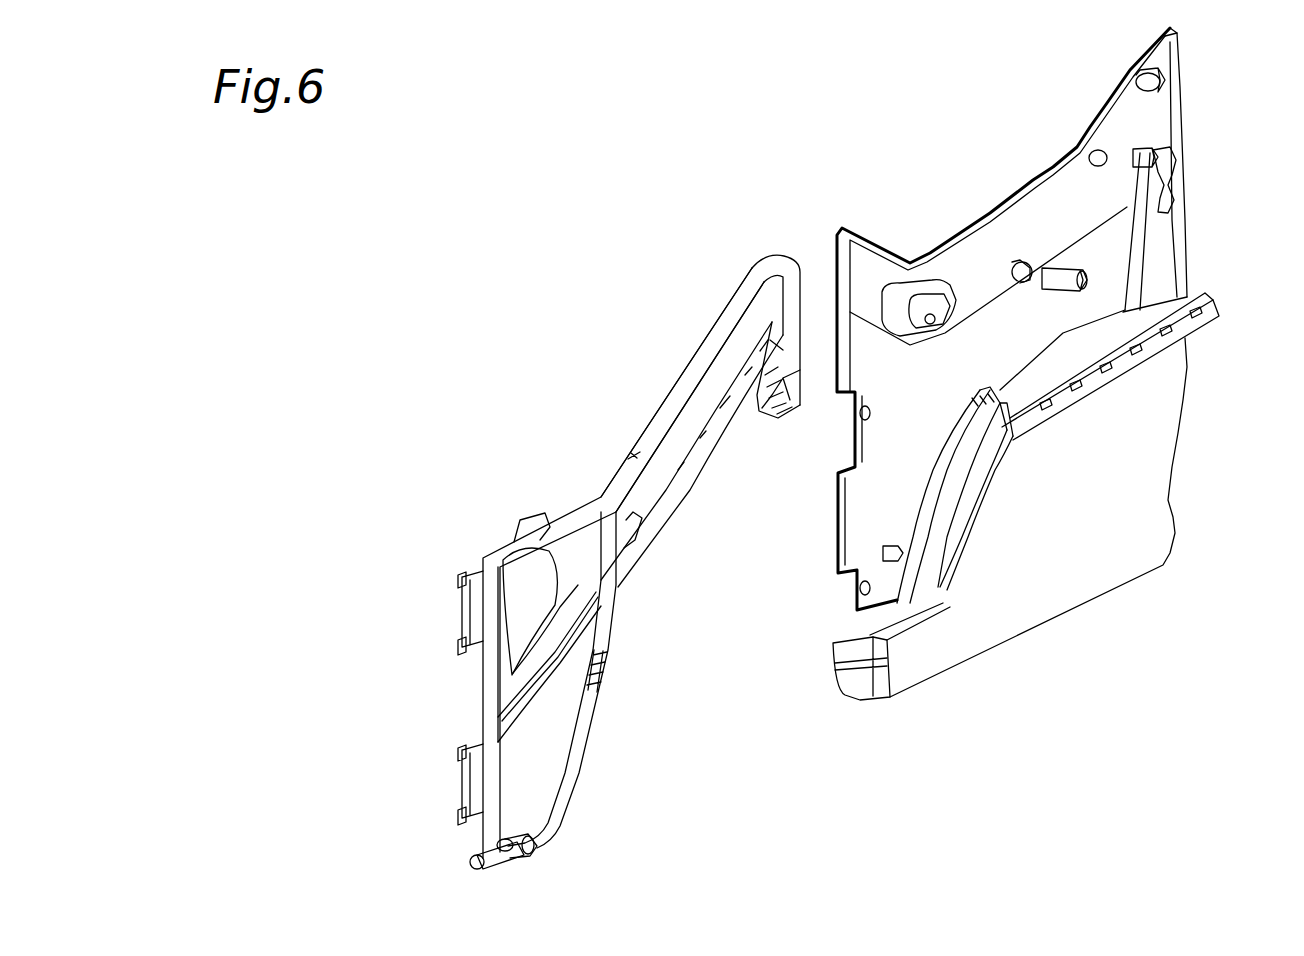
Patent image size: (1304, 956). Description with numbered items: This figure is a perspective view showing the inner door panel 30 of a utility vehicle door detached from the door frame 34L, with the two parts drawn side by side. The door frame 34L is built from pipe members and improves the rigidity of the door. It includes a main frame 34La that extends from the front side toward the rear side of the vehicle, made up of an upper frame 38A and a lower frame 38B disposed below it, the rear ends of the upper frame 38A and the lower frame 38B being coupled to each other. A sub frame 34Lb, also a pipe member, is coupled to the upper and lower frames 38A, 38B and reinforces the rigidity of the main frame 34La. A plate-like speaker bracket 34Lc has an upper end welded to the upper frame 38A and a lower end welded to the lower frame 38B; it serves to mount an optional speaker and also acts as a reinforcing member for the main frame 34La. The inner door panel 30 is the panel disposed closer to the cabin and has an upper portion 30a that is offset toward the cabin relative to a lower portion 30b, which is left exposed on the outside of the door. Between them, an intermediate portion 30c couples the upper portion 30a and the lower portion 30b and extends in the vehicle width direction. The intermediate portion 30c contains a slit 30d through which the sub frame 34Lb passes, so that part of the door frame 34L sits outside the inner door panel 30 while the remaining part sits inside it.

The inner door panel 30 is at (1098, 120).
The upper portion 30a is at (1163, 250).
The lower portion 30b is at (1157, 430).
The intermediate portion 30c is at (1056, 361).
The slit 30d is at (947, 502).
The door frame 34L is at (580, 518).
The main frame 34La is at (698, 313).
The sub frame 34Lb is at (575, 777).
The speaker bracket 34Lc is at (556, 570).
The upper frame 38A is at (667, 417).
The lower frame 38B is at (727, 417).